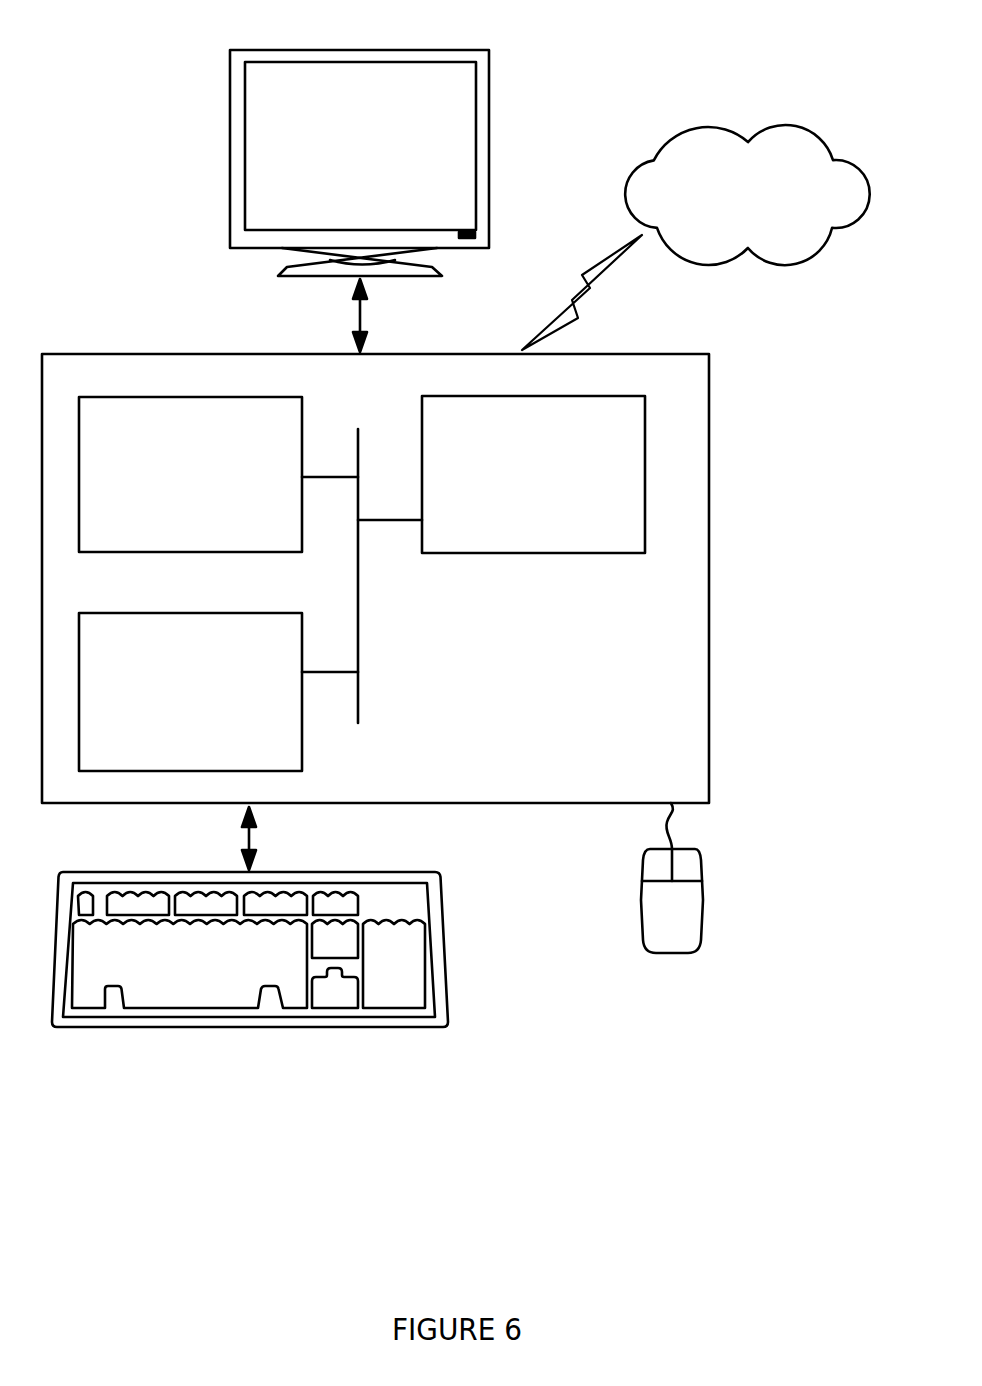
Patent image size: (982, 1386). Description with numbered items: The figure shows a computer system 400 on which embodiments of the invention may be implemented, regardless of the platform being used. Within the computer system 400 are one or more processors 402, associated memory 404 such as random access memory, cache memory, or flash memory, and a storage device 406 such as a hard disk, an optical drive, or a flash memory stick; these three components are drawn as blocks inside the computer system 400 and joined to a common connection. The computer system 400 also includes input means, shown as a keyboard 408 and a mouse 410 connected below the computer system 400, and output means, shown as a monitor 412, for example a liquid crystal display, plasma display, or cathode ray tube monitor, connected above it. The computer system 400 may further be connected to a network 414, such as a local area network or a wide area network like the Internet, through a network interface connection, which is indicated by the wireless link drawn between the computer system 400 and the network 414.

The computer system 400 is at (764, 361).
The processor 402 is at (529, 486).
The memory 404 is at (171, 486).
The storage device 406 is at (167, 704).
The keyboard 408 is at (162, 988).
The mouse 410 is at (651, 924).
The monitor 412 is at (339, 173).
The network 414 is at (727, 212).